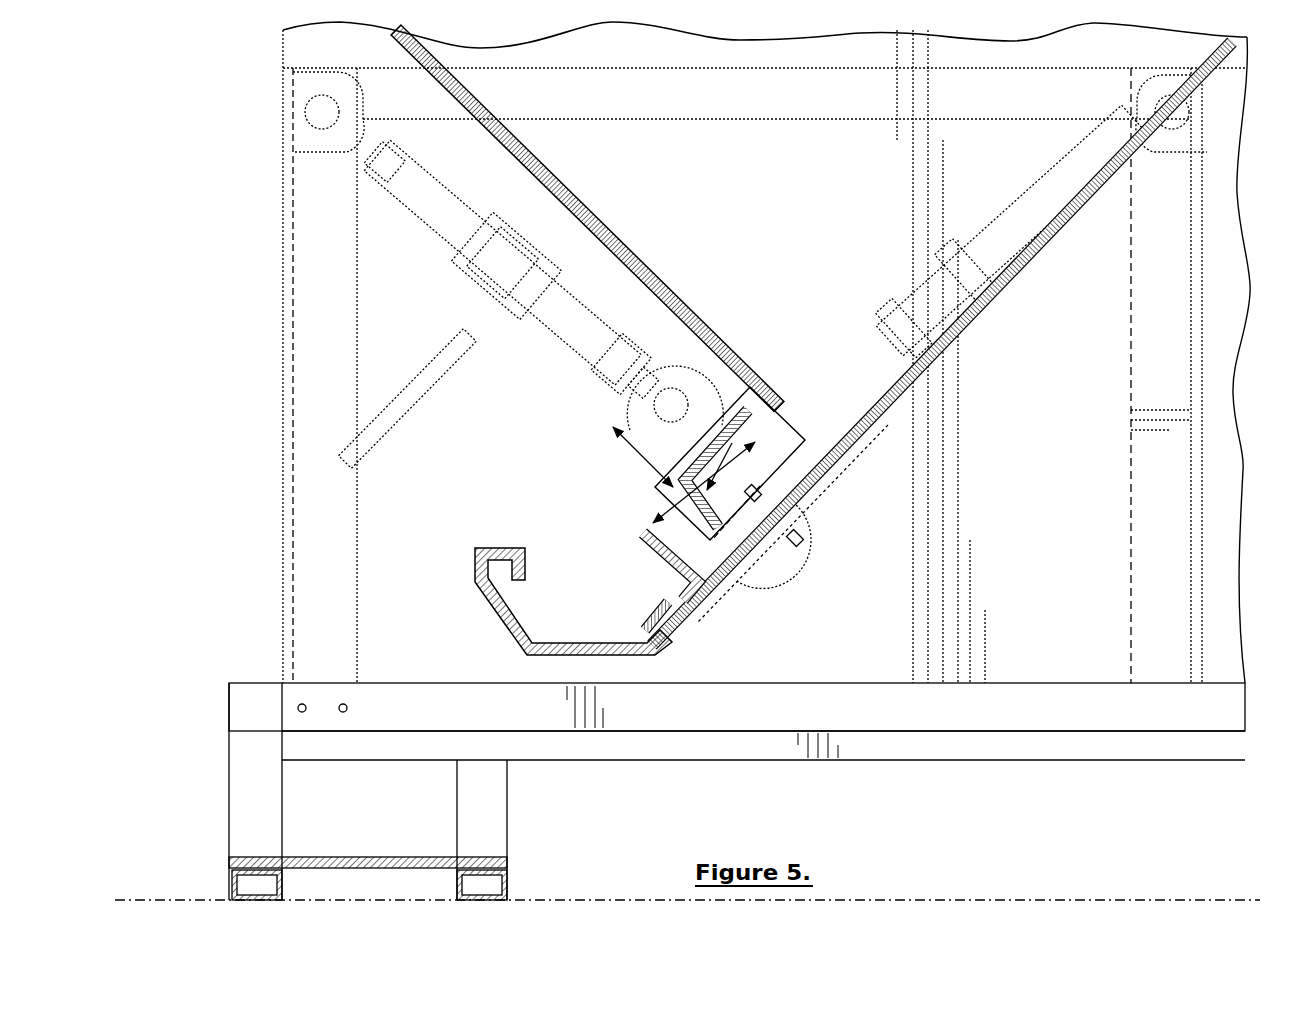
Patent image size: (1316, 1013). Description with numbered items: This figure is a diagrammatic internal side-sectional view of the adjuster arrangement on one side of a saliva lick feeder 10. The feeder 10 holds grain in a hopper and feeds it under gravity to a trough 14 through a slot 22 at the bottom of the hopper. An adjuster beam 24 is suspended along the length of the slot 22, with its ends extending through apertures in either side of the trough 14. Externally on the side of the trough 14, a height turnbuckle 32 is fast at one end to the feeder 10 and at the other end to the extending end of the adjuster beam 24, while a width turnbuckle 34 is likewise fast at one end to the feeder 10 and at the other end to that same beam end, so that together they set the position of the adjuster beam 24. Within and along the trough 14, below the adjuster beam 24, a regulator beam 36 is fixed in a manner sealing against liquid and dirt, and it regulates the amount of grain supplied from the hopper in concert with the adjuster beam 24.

The saliva lick feeder 10 is at (240, 810).
The trough 14 is at (565, 558).
The slot 22 is at (805, 396).
The adjuster beam 24 is at (722, 447).
The height turnbuckle 32 is at (1050, 253).
The width turnbuckle 34 is at (400, 198).
The regulator beam 36 is at (700, 582).